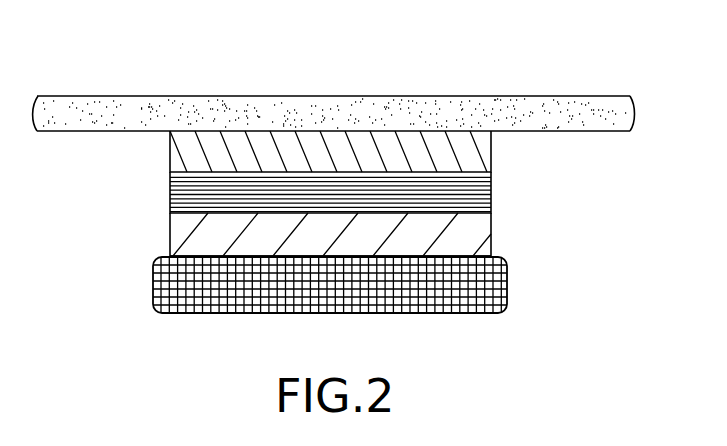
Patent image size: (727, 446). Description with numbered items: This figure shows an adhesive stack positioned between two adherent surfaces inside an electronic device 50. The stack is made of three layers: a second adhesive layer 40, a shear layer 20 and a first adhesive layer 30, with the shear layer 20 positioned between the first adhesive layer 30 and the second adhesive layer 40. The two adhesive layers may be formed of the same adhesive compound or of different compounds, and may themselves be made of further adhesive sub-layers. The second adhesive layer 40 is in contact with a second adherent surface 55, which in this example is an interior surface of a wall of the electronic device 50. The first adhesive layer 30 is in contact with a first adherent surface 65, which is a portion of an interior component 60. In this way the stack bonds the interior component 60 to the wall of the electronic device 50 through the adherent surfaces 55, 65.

The electronic device 50 is at (527, 104).
The second adherent surface 55 is at (588, 131).
The second adhesive layer 40 is at (177, 151).
The shear layer 20 is at (491, 193).
The first adhesive layer 30 is at (170, 234).
The first adherent surface 65 is at (493, 256).
The interior component 60 is at (435, 300).